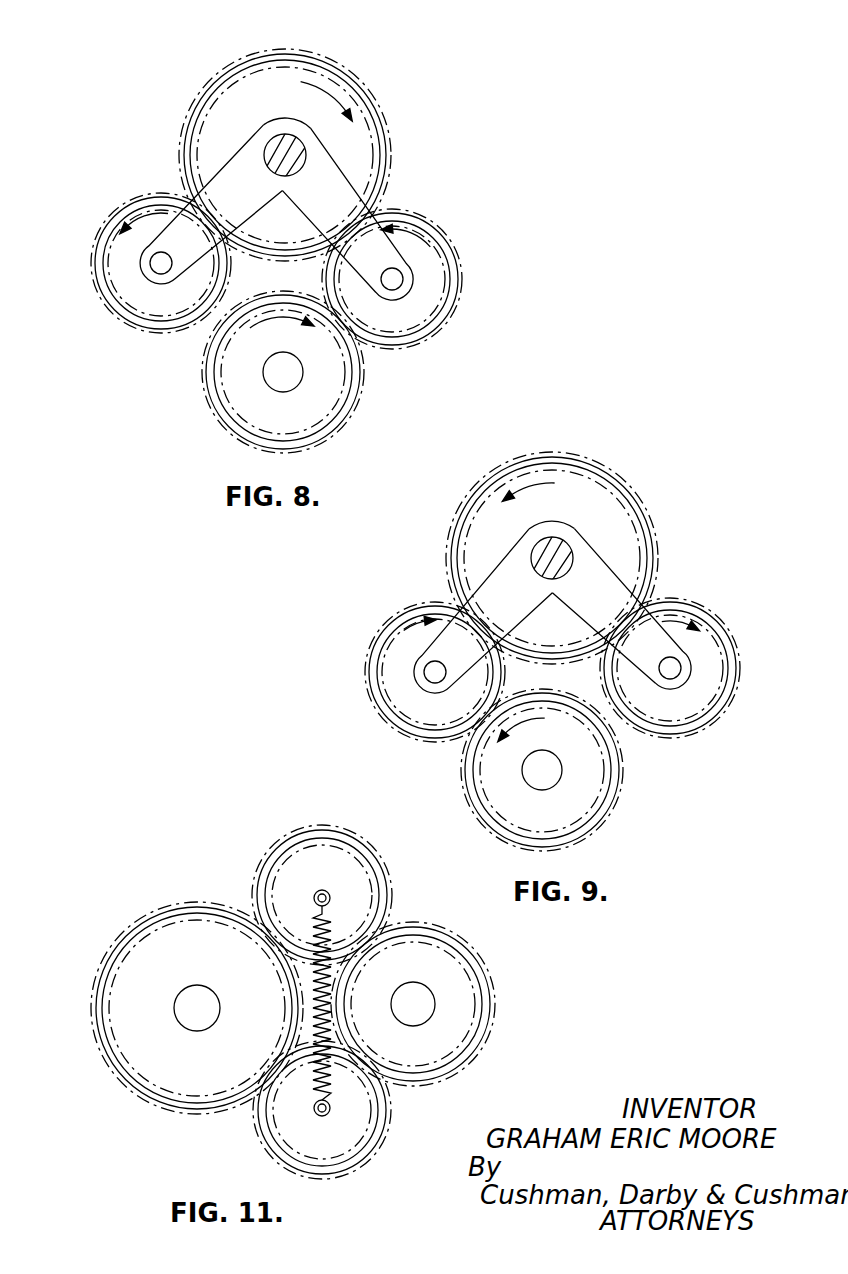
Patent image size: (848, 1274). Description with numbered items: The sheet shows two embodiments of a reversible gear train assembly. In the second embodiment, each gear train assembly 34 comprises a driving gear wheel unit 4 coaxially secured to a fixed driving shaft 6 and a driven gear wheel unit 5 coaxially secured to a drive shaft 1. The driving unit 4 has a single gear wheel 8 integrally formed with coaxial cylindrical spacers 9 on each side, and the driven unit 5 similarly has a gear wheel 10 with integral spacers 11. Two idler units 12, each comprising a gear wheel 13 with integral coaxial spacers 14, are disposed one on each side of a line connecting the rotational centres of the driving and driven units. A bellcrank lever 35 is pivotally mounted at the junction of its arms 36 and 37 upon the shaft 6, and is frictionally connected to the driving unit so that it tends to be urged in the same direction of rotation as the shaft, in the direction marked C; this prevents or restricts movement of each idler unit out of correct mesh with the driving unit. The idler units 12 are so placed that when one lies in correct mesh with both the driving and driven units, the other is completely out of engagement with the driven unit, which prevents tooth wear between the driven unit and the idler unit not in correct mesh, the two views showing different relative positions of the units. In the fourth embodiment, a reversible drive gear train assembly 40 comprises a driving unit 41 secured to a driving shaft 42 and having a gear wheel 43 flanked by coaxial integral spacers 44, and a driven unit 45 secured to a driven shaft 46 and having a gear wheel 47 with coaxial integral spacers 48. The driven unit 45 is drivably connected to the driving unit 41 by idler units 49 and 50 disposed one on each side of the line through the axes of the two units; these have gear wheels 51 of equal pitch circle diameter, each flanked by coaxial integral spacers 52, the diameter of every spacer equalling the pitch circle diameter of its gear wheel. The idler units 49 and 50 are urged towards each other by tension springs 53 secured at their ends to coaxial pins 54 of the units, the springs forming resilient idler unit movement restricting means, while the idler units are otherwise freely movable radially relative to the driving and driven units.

In FIG. 8, the drive shaft 1 is at (268, 373).
In FIG. 9, the drive shaft 1 is at (532, 772).
In FIG. 8, the driving gear wheel unit 4 is at (278, 87).
In FIG. 9, the driving gear wheel unit 4 is at (595, 505).
In FIG. 8, the driven gear wheel unit 5 is at (332, 381).
In FIG. 9, the driven gear wheel unit 5 is at (515, 813).
In FIG. 8, the driving shaft 6 is at (292, 162).
In FIG. 9, the driving shaft 6 is at (563, 558).
In FIG. 8, the gear wheel 8 is at (387, 178).
In FIG. 9, the gear wheel 8 is at (448, 569).
In FIG. 8, the cylindrical spacers 9 is at (385, 118).
In FIG. 9, the cylindrical spacers 9 is at (453, 547).
In FIG. 8, the gear wheel 10 is at (345, 435).
In FIG. 9, the gear wheel 10 is at (458, 767).
In FIG. 8, the spacers 11 is at (232, 437).
In FIG. 9, the spacers 11 is at (478, 813).
In FIG. 8, the idler unit 12 is at (122, 265).
In FIG. 8, the gear wheel 13 is at (107, 218).
In FIG. 9, the gear wheel 13 is at (733, 635).
In FIG. 8, the spacers 14 is at (125, 319).
In FIG. 9, the spacers 14 is at (368, 697).
In FIG. 8, the gear train assembly 34 is at (340, 62).
In FIG. 9, the gear train assembly 34 is at (447, 527).
In FIG. 8, the bellcrank lever 35 is at (243, 172).
In FIG. 9, the bellcrank lever 35 is at (511, 570).
In FIG. 8, the arm 36 is at (213, 183).
In FIG. 9, the arm 36 is at (478, 583).
In FIG. 8, the arm 37 is at (360, 190).
In FIG. 9, the arm 37 is at (630, 586).
In FIG. 8, the direction of movement C is at (392, 279).
In FIG. 9, the direction of movement C is at (435, 672).
In FIG. 11, the reversible drive gear train assembly 40 is at (92, 1050).
In FIG. 11, the driving unit 41 is at (138, 993).
In FIG. 11, the driving shaft 42 is at (207, 1019).
In FIG. 11, the gear wheel 43 is at (131, 926).
In FIG. 11, the spacers 44 is at (173, 910).
In FIG. 11, the driven unit 45 is at (471, 1009).
In FIG. 11, the driven shaft 46 is at (429, 1017).
In FIG. 11, the gear wheel 47 is at (456, 932).
In FIG. 11, the spacers 48 is at (501, 984).
In FIG. 11, the idler unit 49 is at (329, 858).
In FIG. 11, the idler unit 50 is at (351, 1146).
In FIG. 11, the gear wheels 51 is at (358, 837).
In FIG. 11, the spacers 52 is at (305, 839).
In FIG. 11, the tension springs 53 is at (336, 1076).
In FIG. 11, the coaxial pins 54 is at (316, 894).